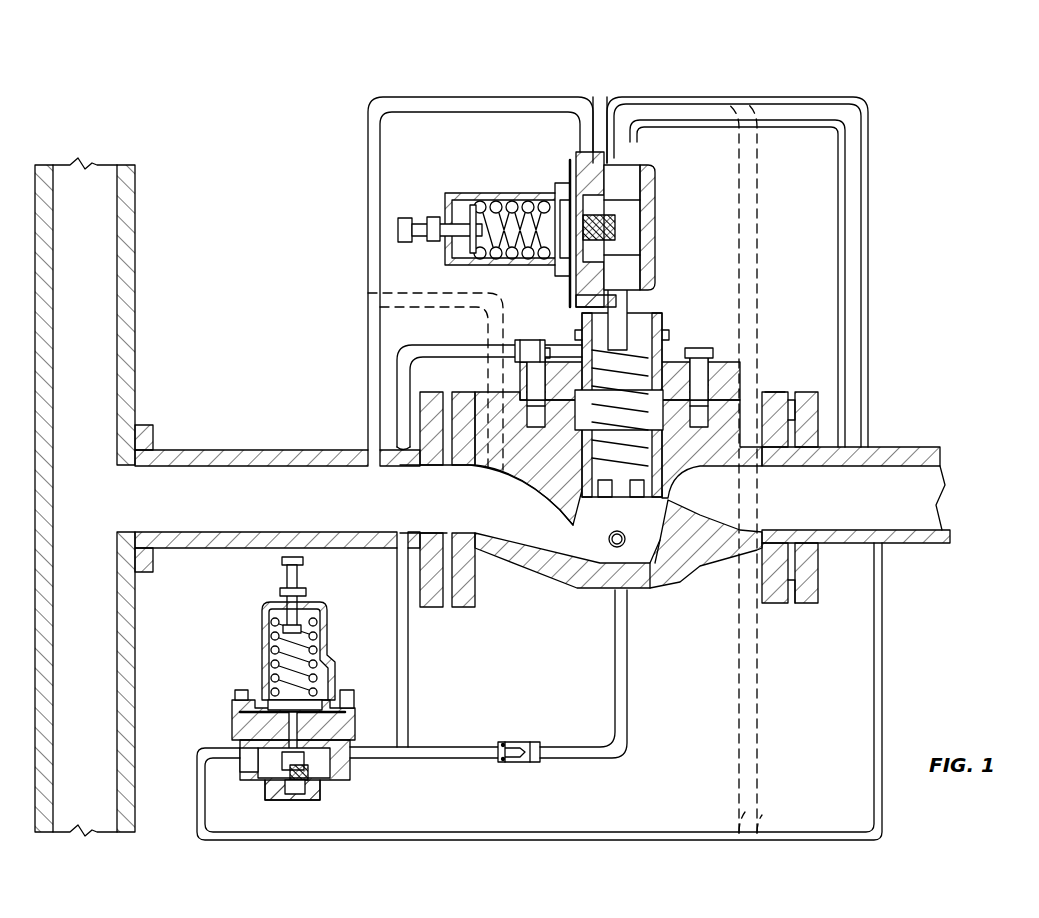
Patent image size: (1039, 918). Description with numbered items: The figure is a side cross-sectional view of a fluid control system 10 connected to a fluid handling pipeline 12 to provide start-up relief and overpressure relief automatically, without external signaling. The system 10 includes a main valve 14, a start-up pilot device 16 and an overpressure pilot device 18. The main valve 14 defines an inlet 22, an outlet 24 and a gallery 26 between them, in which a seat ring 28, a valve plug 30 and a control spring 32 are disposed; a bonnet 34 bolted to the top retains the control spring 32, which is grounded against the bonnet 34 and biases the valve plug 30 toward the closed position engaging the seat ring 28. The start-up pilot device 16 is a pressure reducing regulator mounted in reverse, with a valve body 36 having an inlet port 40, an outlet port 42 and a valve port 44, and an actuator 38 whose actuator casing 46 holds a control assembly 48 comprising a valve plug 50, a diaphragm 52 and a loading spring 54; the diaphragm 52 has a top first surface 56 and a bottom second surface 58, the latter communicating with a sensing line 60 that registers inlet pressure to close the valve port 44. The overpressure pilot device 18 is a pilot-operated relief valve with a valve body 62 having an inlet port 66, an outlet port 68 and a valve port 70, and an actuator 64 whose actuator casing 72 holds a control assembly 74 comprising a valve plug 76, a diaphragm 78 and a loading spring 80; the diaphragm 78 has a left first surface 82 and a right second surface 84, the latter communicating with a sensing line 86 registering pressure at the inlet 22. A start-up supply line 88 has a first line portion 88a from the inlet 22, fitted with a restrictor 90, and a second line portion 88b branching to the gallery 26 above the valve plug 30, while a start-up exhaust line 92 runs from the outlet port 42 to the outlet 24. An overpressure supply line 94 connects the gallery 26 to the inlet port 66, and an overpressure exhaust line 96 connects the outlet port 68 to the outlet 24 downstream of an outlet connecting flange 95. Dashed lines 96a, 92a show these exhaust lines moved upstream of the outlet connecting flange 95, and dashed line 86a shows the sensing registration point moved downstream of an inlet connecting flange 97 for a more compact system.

The system 10 is at (493, 452).
The fluid handling pipeline 12 is at (137, 265).
The main valve 14 is at (581, 461).
The start-up pilot device 16 is at (295, 693).
The overpressure pilot device 18 is at (545, 226).
The inlet 22 is at (460, 508).
The outlet 24 is at (793, 500).
The gallery 26 is at (650, 350).
The seat ring 28 is at (640, 560).
The valve plug 30 is at (601, 539).
The control spring 32 is at (640, 318).
The bonnet 34 is at (675, 365).
The valve body 36 is at (300, 795).
The actuator 38 is at (330, 636).
The inlet port 40 is at (330, 774).
The outlet port 42 is at (245, 762).
The valve port 44 is at (280, 775).
The actuator casing 46 is at (312, 602).
The control assembly 48 is at (258, 656).
The valve plug 50 is at (318, 780).
The diaphragm 52 is at (240, 700).
The loading spring 54 is at (298, 635).
The first surface 56 is at (322, 702).
The second surface 58 is at (350, 712).
The sensing line 60 is at (322, 722).
The valve body 62 is at (600, 150).
The actuator 64 is at (447, 197).
The inlet port 66 is at (645, 268).
The outlet port 68 is at (628, 150).
The valve port 70 is at (640, 228).
The actuator casing 72 is at (458, 262).
The control assembly 74 is at (510, 190).
The valve plug 76 is at (648, 178).
The diaphragm 78 is at (570, 162).
The loading spring 80 is at (505, 263).
The first surface 82 is at (562, 186).
The second surface 84 is at (582, 302).
The sensing line 86 is at (545, 97).
The dashed line 86a is at (488, 382).
The start-up supply line 88 is at (504, 680).
The first line portion 88a is at (558, 762).
The second line portion 88b is at (456, 760).
The restrictor 90 is at (520, 742).
The start-up exhaust line 92 is at (520, 842).
The dashed line 92a is at (757, 705).
The overpressure supply line 94 is at (627, 302).
The outlet connecting flange 95 is at (775, 392).
The overpressure exhaust line 96 is at (770, 97).
The dashed line 96a is at (758, 212).
The inlet connecting flange 97 is at (433, 600).